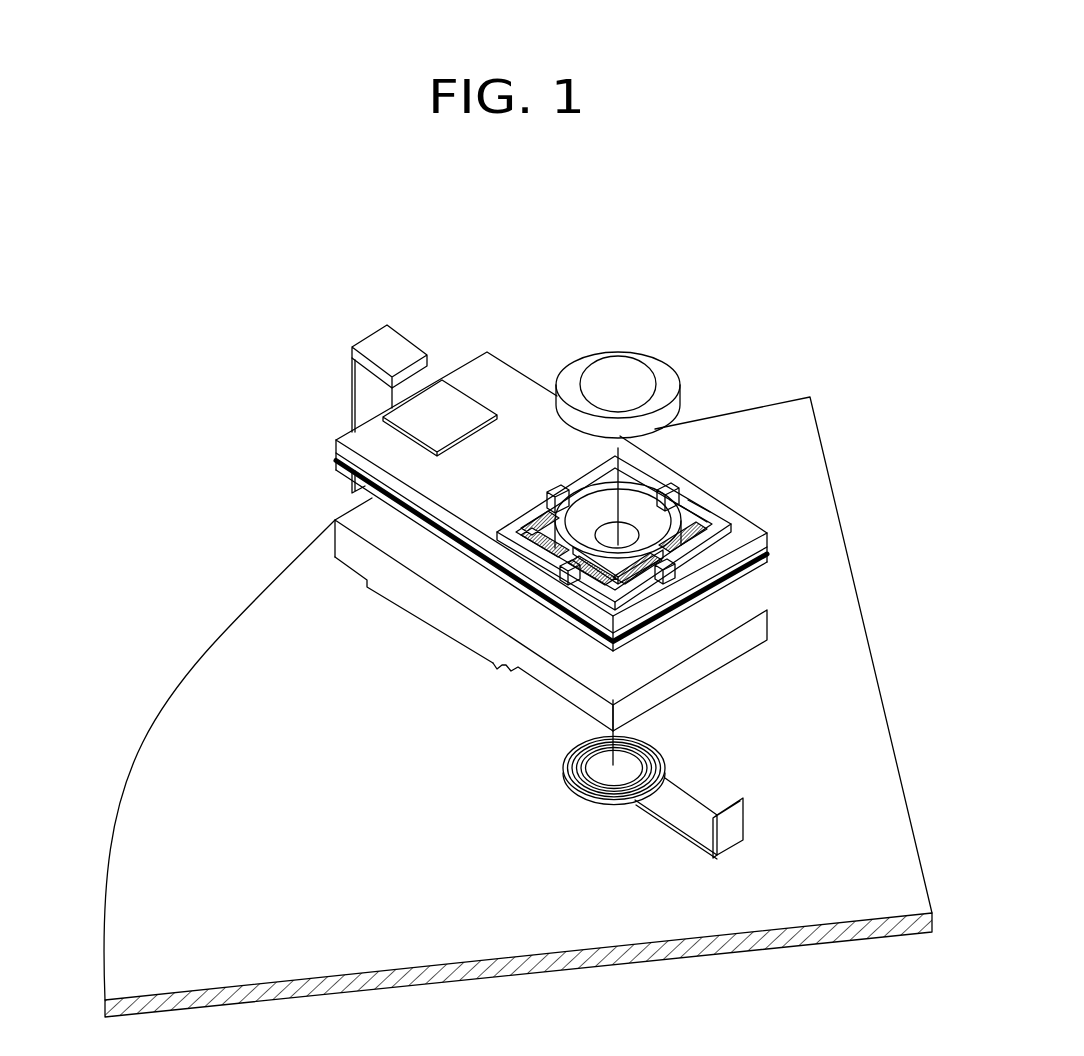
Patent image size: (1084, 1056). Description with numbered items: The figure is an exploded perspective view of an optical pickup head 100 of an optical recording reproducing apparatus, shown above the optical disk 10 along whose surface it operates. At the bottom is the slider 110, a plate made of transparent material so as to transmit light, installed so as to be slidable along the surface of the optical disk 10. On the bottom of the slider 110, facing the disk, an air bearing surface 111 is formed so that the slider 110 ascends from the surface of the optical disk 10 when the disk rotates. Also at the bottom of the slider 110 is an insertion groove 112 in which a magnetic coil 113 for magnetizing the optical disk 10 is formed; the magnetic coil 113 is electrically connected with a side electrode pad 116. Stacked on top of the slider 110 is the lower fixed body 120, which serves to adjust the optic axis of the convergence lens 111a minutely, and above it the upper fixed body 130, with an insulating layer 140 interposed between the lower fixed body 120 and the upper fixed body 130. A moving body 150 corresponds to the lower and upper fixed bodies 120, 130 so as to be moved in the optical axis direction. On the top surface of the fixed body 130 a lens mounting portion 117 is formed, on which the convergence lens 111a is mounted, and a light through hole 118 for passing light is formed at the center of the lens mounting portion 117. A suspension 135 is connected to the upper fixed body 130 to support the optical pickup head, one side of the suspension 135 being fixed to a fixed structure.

The optical disk 10 is at (160, 772).
The optical pickup head 100 is at (541, 258).
The slider 110 is at (353, 552).
The air bearing surface 111 is at (366, 581).
The convergence lens 111a is at (578, 370).
The insertion groove 112 is at (518, 670).
The magnetic coil 113 is at (607, 795).
The side electrode pad 116 is at (733, 837).
The lens mounting portion 117 is at (660, 490).
The light through hole 118 is at (623, 522).
The lower fixed body 120 is at (336, 468).
The upper fixed body 130 is at (336, 444).
The suspension 135 is at (380, 339).
The insulating layer 140 is at (336, 461).
The moving body 150 is at (690, 518).